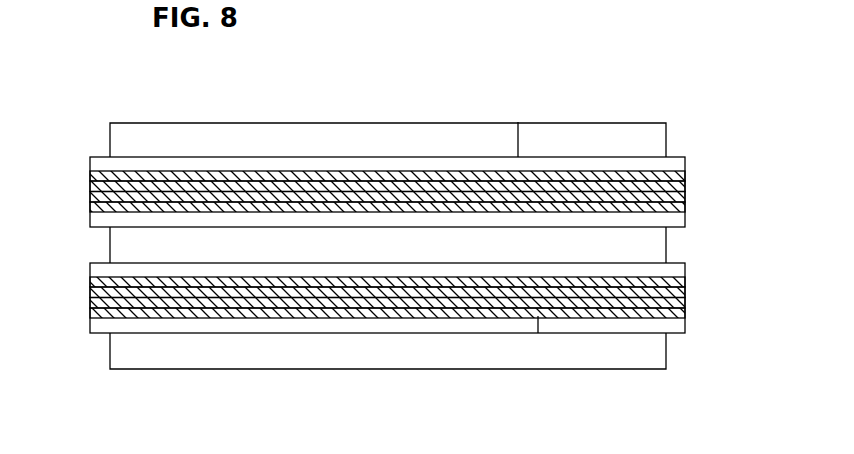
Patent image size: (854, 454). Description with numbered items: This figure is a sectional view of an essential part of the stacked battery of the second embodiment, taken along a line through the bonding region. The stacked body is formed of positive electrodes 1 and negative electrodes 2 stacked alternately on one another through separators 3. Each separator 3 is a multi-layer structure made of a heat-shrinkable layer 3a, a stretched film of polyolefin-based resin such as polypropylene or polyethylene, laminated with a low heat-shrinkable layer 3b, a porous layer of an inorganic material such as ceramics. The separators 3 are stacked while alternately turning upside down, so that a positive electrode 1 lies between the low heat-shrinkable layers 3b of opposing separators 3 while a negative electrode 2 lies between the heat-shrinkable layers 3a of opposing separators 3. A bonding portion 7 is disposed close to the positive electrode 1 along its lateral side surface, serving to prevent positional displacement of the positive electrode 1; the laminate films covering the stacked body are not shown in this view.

The positive electrode 1 is at (89, 187).
The negative electrode 2 is at (130, 143).
The separator 3 is at (447, 241).
The heat-shrinkable layer 3a is at (686, 175).
The low heat-shrinkable layer 3b is at (430, 242).
The bonding portion 7 is at (518, 158).